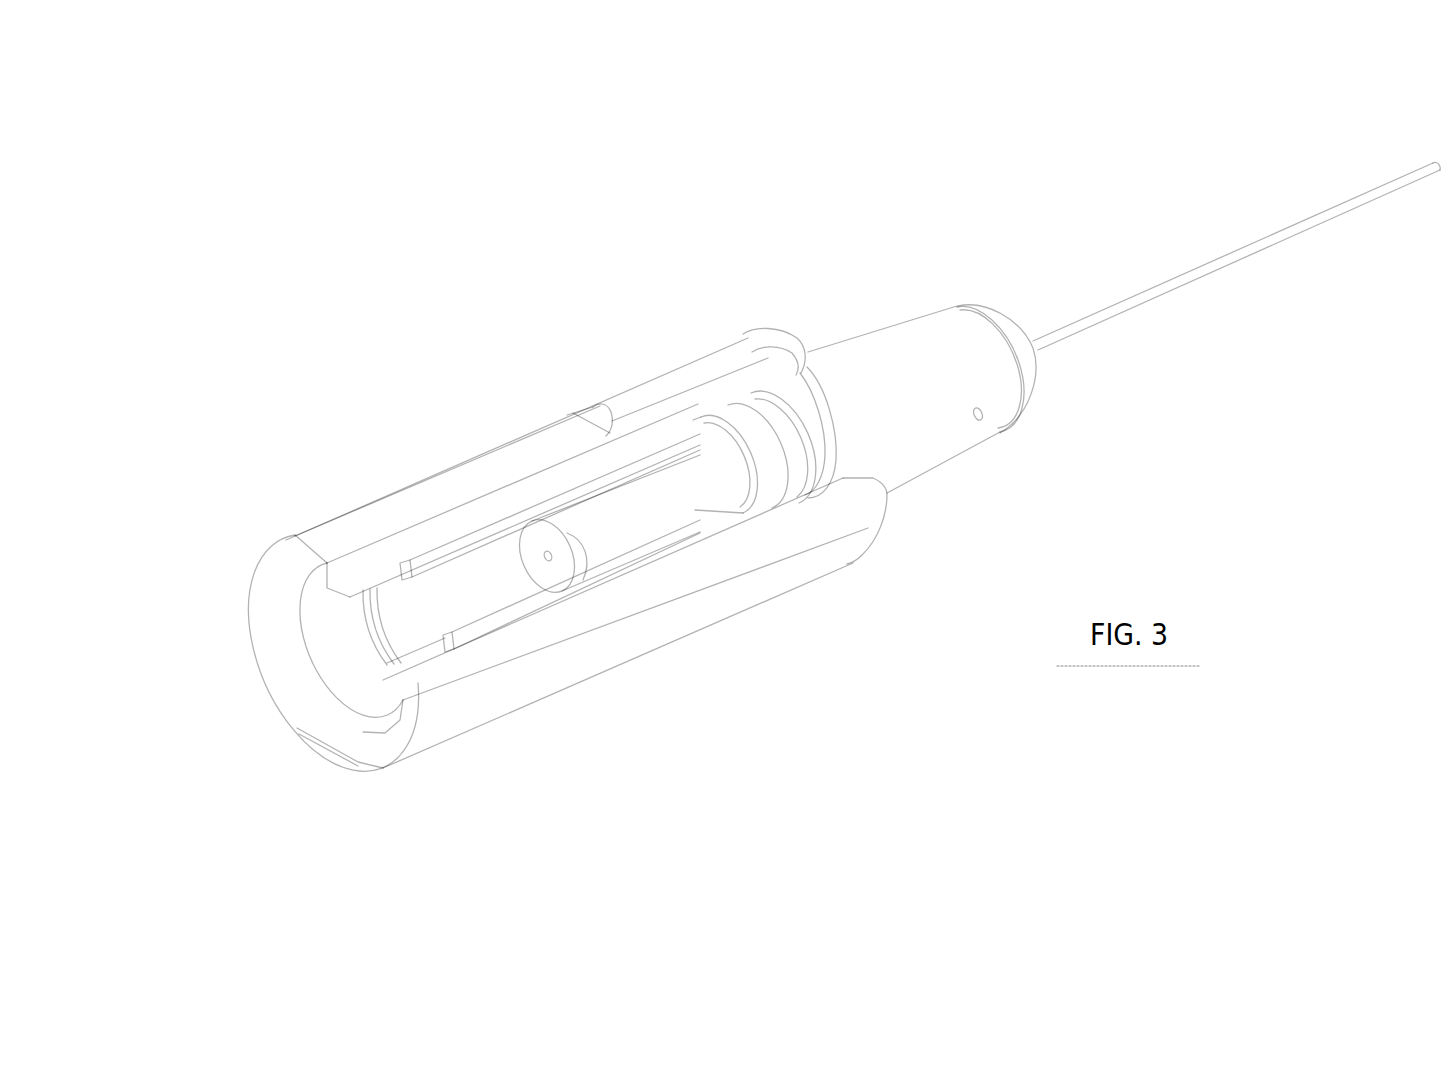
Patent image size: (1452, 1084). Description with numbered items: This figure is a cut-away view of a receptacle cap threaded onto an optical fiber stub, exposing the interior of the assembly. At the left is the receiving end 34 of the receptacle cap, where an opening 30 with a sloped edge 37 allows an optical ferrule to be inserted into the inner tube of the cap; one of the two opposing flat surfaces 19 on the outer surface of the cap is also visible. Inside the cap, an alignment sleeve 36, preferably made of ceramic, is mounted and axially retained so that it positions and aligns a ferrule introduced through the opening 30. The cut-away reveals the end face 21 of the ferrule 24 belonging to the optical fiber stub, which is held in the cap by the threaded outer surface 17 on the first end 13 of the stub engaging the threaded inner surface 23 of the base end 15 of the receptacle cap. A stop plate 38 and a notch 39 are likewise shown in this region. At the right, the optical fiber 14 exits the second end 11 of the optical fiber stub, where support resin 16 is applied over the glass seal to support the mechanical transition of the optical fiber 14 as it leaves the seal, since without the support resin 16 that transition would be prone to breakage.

The second end 11 is at (913, 387).
The first end 13 is at (735, 408).
The optical fiber 14 is at (1283, 230).
The base end 15 is at (715, 400).
The support resin 16 is at (1030, 375).
The threaded outer surface 17 is at (792, 470).
The flat surface 19 is at (388, 520).
The end face 21 is at (523, 533).
The threaded inner surface 23 is at (782, 512).
The ferrule 24 is at (638, 532).
The opening 30 is at (338, 672).
The receiving end 34 is at (447, 720).
The alignment sleeve 36 is at (490, 628).
The sloped edge 37 is at (300, 600).
The stop plate 38 is at (767, 387).
The notch 39 is at (983, 420).